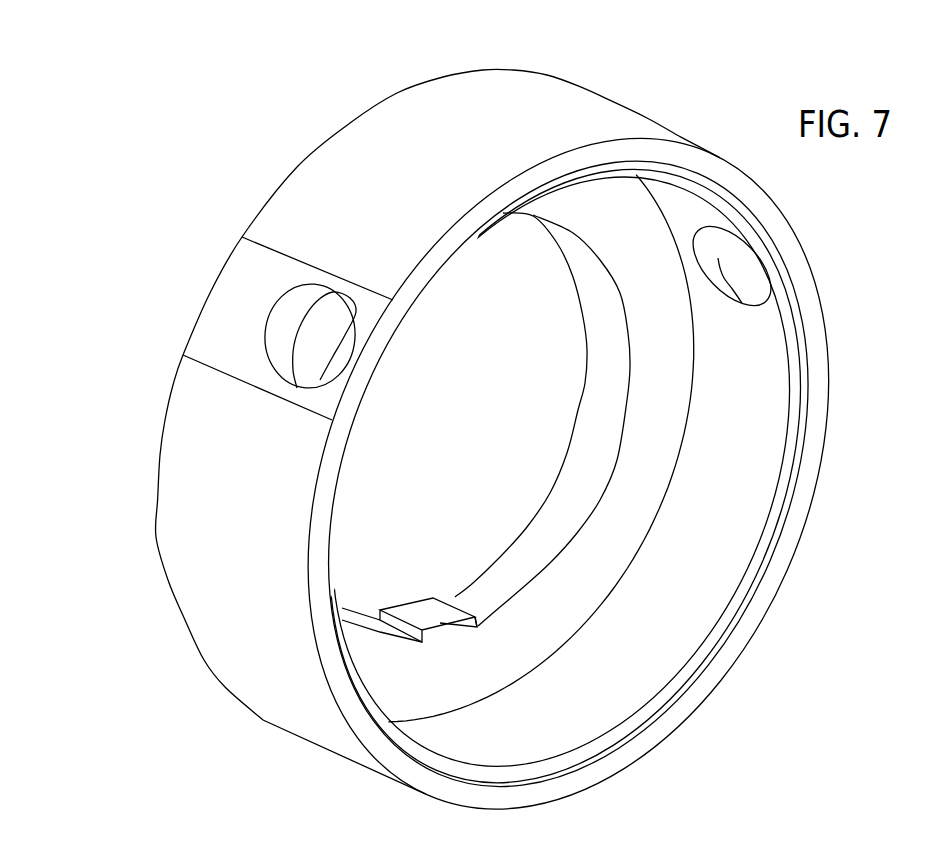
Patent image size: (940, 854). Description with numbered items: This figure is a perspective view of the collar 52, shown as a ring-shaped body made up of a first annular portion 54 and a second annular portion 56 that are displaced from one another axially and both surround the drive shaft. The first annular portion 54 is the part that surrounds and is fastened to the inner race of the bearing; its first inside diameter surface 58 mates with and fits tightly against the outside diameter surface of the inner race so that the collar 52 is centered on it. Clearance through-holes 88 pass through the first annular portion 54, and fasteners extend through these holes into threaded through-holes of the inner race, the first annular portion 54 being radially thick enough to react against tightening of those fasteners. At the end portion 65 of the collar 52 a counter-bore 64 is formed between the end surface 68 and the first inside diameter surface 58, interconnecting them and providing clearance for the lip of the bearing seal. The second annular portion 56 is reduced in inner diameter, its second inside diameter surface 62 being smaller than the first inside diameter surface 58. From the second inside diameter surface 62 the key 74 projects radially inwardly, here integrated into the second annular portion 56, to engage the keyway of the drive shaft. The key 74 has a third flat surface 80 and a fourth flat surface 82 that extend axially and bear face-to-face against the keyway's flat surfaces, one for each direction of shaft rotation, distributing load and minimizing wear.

The collar 52 is at (541, 455).
The first annular portion 54 is at (743, 423).
The second annular portion 56 is at (583, 575).
The first inside diameter surface 58 is at (723, 488).
The second inside diameter surface 62 is at (495, 590).
The counter-bore 64 is at (690, 667).
The end portion 65 is at (788, 560).
The end surface 68 is at (750, 618).
The key 74 is at (420, 607).
The third flat surface 80 is at (380, 615).
The fourth flat surface 82 is at (483, 617).
The clearance through-hole 88 is at (283, 327).